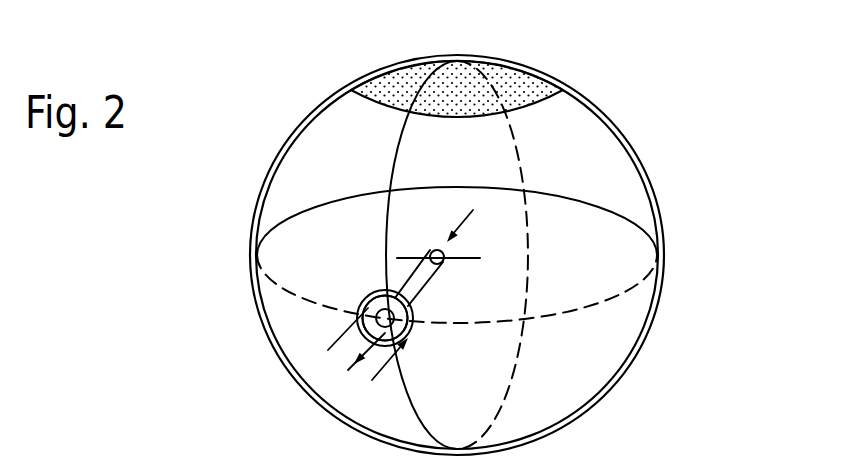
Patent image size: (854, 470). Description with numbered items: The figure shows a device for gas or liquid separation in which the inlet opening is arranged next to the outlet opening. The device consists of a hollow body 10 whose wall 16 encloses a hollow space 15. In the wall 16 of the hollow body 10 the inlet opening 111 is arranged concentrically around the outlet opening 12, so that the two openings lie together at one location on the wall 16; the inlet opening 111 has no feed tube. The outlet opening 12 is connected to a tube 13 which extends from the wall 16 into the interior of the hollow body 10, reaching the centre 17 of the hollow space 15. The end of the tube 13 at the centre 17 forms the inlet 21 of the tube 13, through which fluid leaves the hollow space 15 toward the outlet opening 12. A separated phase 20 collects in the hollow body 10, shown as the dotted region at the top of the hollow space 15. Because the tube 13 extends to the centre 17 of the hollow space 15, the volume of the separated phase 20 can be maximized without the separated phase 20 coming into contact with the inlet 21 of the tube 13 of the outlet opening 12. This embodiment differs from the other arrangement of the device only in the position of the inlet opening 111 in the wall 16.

The hollow body 10 is at (640, 368).
The outlet opening 12 is at (392, 325).
The tube 13 is at (415, 280).
The hollow space 15 is at (323, 150).
The wall 16 is at (637, 162).
The centre 17 is at (449, 259).
The separated phase 20 is at (525, 85).
The inlet 21 is at (438, 248).
The inlet opening 111 is at (413, 318).